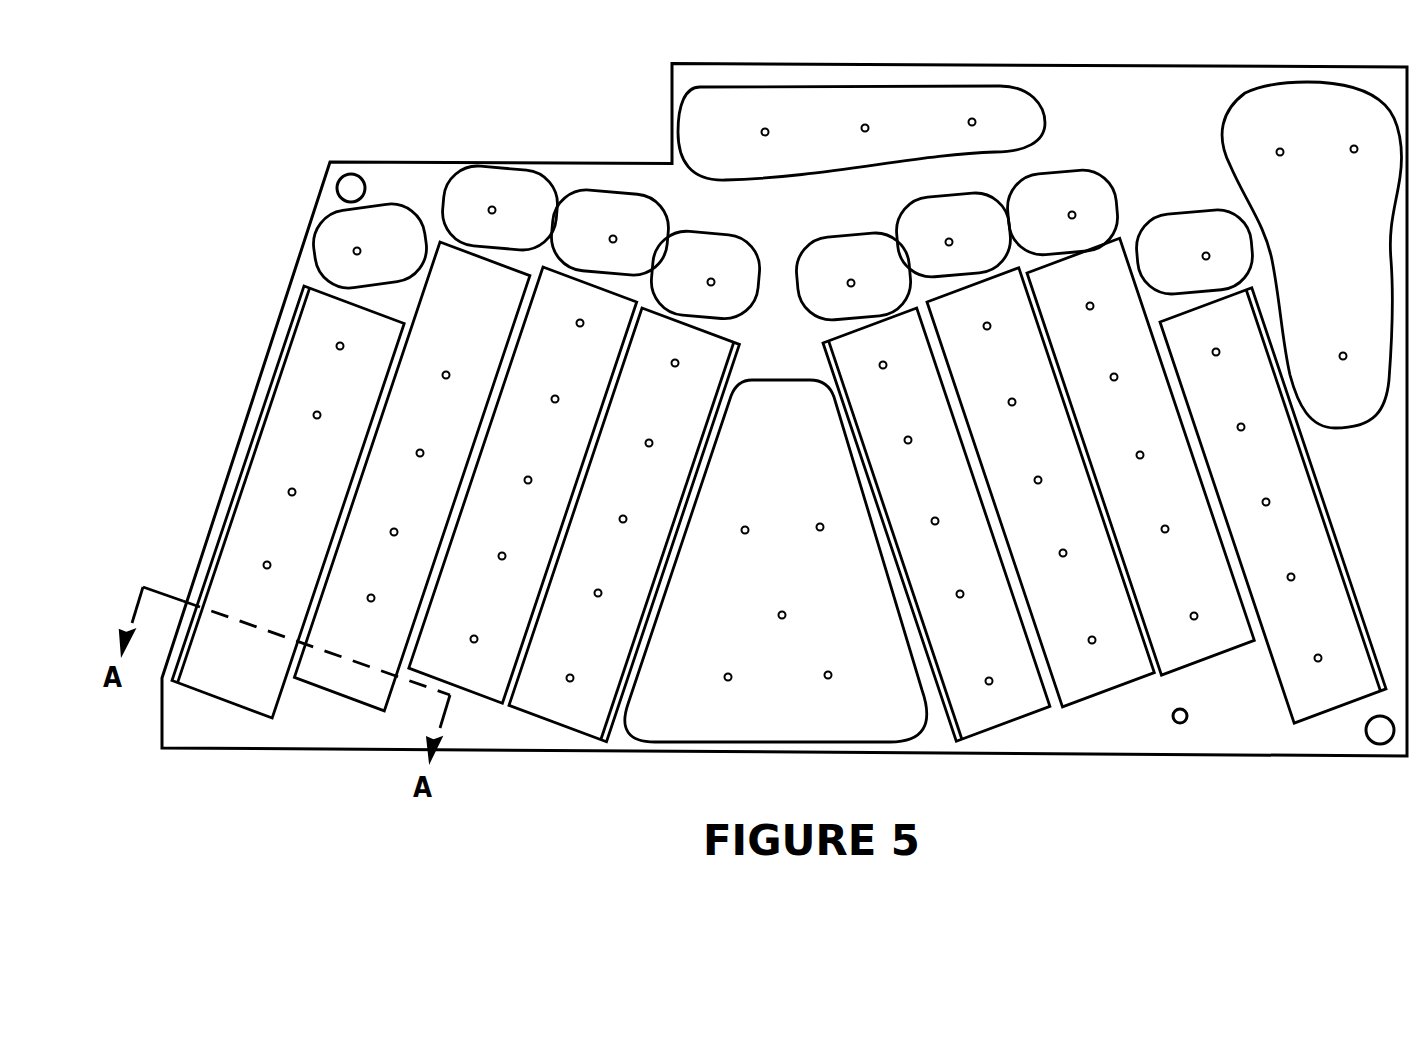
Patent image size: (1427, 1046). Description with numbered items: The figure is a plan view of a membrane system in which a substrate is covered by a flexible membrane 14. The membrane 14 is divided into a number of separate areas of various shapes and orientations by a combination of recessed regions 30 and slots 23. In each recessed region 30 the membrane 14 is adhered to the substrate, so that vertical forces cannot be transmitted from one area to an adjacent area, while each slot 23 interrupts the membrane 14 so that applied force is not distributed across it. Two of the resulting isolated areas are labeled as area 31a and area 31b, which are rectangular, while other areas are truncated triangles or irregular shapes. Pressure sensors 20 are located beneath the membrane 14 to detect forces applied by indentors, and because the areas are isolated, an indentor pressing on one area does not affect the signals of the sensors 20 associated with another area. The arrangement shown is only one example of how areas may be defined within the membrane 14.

The flexible membrane 14 is at (320, 194).
The pressure sensors 20 is at (1193, 623).
The slot 23 is at (386, 350).
The recessed region 30 is at (398, 186).
The isolated area 31a is at (310, 548).
The isolated area 31b is at (415, 580).